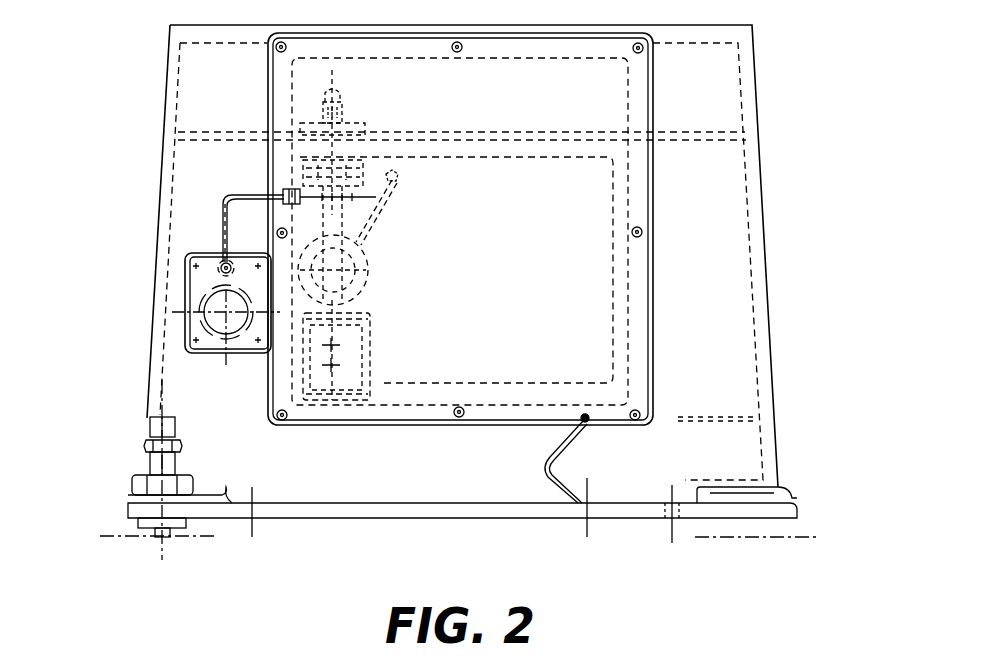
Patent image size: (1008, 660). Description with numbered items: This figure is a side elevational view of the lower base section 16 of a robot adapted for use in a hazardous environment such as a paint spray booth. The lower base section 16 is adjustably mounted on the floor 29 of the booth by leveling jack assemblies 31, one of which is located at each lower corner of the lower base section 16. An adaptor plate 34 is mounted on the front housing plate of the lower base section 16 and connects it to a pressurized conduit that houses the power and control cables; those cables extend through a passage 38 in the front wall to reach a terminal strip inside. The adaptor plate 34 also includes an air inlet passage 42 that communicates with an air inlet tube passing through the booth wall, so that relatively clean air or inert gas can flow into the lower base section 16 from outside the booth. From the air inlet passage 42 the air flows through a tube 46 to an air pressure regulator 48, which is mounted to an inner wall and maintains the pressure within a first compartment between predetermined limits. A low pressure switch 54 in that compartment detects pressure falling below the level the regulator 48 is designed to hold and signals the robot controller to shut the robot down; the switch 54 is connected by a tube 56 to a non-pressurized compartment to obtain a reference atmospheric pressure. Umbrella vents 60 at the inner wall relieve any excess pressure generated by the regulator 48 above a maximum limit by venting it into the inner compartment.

The lower base section 16 is at (757, 88).
The floor 29 is at (214, 539).
The leveling jack assembly 31 is at (147, 440).
The adaptor plate 34 is at (238, 350).
The passage 38 is at (222, 326).
The air inlet passage 42 is at (224, 258).
The tube 46 is at (247, 192).
The air pressure regulator 48 is at (358, 123).
The low pressure switch 54 is at (372, 268).
The tube 56 is at (388, 214).
The umbrella vent 60 is at (376, 360).